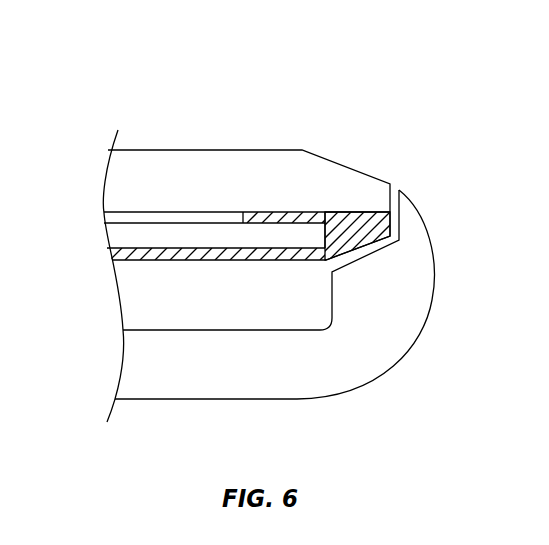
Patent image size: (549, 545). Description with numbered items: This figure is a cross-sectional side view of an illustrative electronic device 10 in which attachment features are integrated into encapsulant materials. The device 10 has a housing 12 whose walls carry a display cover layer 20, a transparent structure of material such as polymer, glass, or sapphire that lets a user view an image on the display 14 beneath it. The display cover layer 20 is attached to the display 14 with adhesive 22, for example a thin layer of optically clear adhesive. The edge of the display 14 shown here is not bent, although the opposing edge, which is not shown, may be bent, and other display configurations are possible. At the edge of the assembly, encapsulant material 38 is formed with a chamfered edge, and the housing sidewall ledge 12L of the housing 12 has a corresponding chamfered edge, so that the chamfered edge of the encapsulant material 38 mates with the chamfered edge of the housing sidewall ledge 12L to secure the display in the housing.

The electronic device 10 is at (183, 76).
The housing 12 is at (287, 385).
The housing sidewall ledge 12L is at (370, 266).
The display 14 is at (228, 232).
The display cover layer 20 is at (322, 172).
The adhesive 22 is at (164, 213).
The encapsulant material 38 is at (371, 213).